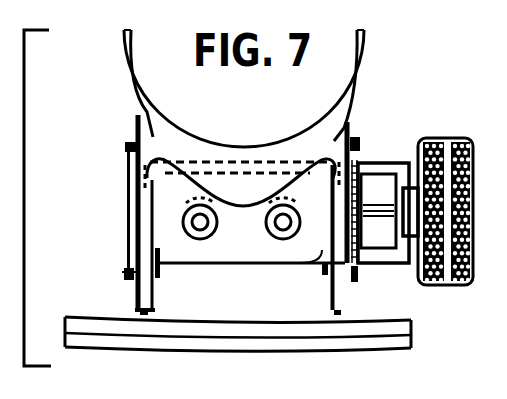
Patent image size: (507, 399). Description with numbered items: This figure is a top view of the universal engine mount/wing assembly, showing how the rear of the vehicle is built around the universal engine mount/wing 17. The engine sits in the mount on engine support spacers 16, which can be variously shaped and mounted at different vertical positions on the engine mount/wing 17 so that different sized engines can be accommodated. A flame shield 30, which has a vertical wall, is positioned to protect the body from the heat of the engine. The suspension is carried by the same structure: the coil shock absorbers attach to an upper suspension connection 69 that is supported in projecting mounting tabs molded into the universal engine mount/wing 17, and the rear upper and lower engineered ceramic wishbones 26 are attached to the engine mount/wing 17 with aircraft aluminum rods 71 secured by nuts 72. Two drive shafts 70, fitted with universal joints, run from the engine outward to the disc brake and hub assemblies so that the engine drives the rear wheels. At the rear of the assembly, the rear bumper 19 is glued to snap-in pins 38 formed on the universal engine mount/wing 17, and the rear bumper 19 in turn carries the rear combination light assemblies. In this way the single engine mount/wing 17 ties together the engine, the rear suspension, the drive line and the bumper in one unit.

The engine support spacers 16 is at (159, 262).
The universal engine mount/wing 17 is at (354, 128).
The rear bumper 19 is at (341, 350).
The rear upper and lower engineered ceramic wishbones 26 is at (396, 163).
The flame shield 30 is at (218, 193).
The snap-in pins 38 is at (145, 314).
The upper suspension connection 69 is at (359, 265).
The drive shafts 70 is at (371, 223).
The aircraft aluminum rods 71 is at (135, 222).
The nuts 72 is at (127, 279).